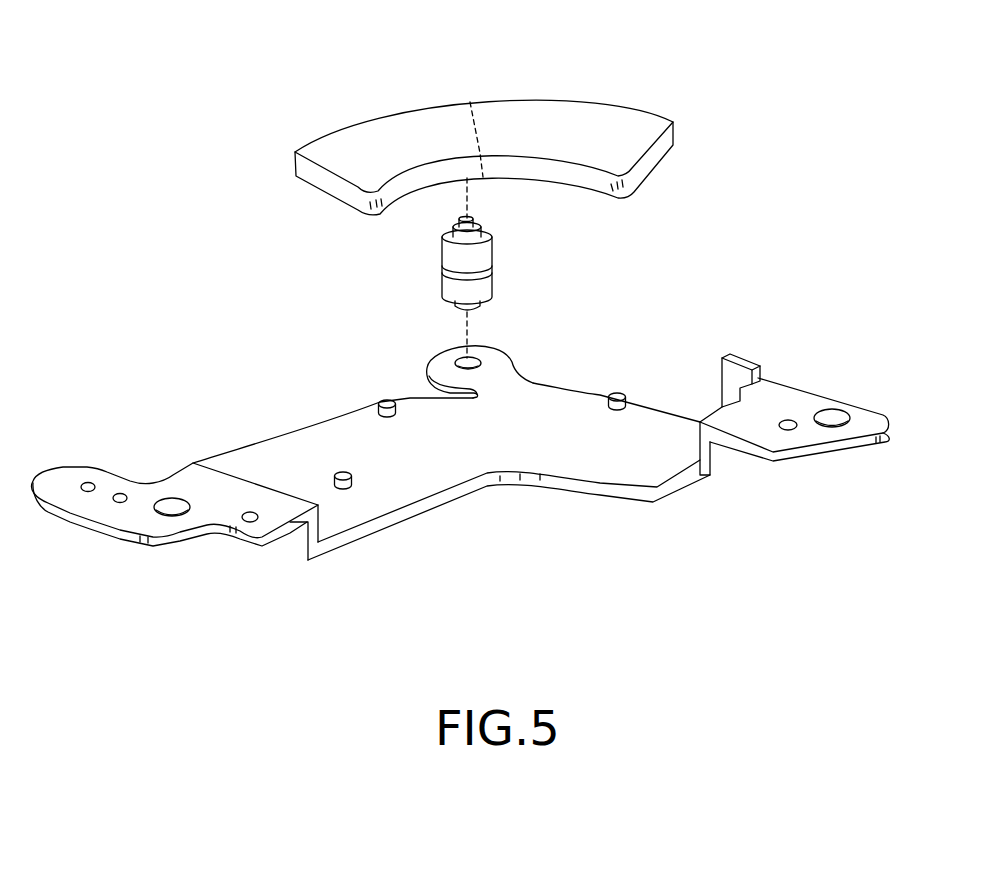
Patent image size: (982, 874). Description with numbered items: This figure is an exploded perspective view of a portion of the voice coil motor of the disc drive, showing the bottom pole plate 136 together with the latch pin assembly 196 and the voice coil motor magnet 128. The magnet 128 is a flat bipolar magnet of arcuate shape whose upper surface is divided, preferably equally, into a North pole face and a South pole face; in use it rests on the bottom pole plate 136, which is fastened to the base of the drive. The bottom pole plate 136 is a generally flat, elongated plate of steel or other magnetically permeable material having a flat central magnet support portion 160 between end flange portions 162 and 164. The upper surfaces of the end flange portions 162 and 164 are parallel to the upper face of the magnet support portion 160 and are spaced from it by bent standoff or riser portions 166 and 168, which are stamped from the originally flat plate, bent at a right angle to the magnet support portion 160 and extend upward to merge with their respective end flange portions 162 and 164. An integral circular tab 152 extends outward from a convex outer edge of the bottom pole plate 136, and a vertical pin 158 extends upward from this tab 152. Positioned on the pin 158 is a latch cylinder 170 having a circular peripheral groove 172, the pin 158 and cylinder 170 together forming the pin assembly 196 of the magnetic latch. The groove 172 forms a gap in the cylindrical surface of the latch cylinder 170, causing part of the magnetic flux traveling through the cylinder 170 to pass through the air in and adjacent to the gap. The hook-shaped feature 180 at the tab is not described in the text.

The voice coil motor magnet 128 is at (537, 123).
The vertical pin 158 is at (475, 221).
The latch cylinder 170 is at (489, 262).
The circular peripheral groove 172 is at (444, 270).
The pin assembly 196 is at (548, 239).
The circular tab 152 is at (497, 362).
The hook-shaped slot 180 is at (462, 358).
The magnet support portion 160 is at (442, 465).
The end flange portion 162 is at (108, 505).
The bent riser portion 166 is at (297, 542).
The end flange portion 164 is at (800, 398).
The bent riser portion 168 is at (723, 456).
The bottom pole plate 136 is at (668, 532).